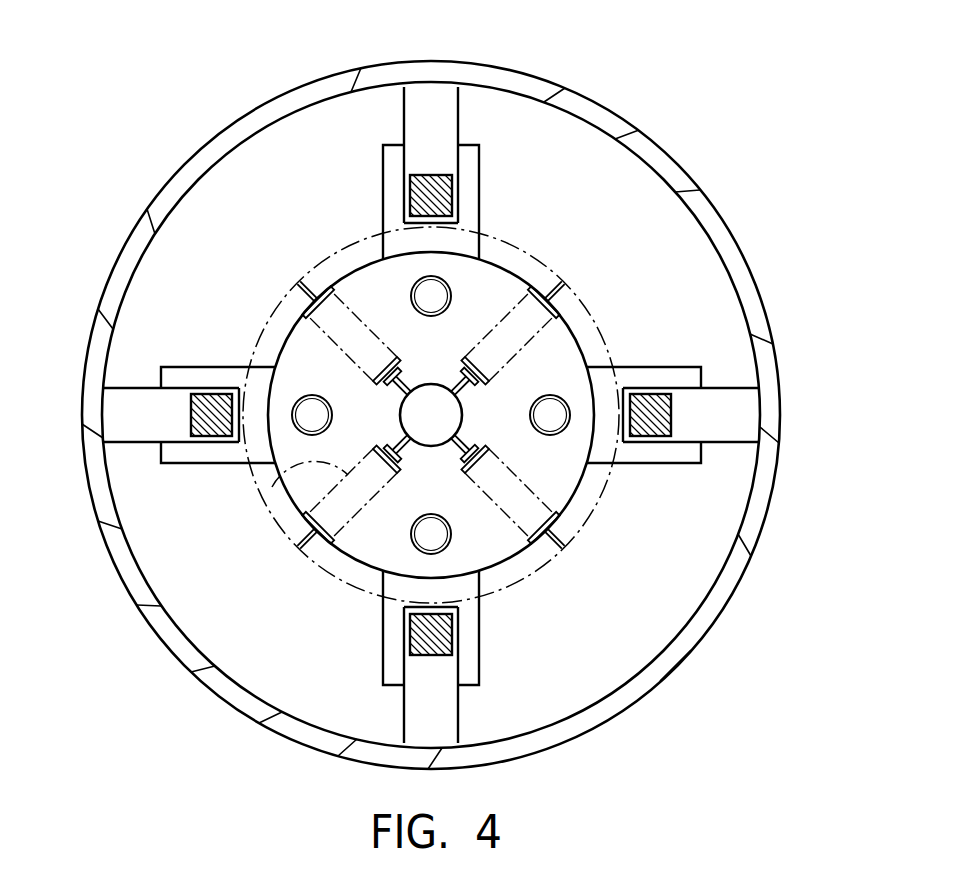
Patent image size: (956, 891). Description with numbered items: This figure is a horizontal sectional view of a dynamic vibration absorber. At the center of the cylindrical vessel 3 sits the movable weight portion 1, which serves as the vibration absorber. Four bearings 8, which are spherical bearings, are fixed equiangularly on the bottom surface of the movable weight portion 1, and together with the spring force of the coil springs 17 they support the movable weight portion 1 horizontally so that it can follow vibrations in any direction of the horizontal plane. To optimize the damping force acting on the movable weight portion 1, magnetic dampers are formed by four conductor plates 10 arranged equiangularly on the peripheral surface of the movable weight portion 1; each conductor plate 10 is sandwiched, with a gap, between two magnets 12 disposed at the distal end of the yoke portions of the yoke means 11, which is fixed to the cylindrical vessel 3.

The movable weight portion 1 is at (495, 283).
The cylindrical vessel 3 is at (616, 121).
The bearing 8 is at (551, 396).
The conductor plate 10 is at (663, 372).
The yoke means 11 is at (732, 436).
The magnet 12 is at (646, 434).
The coil spring 17 is at (279, 487).